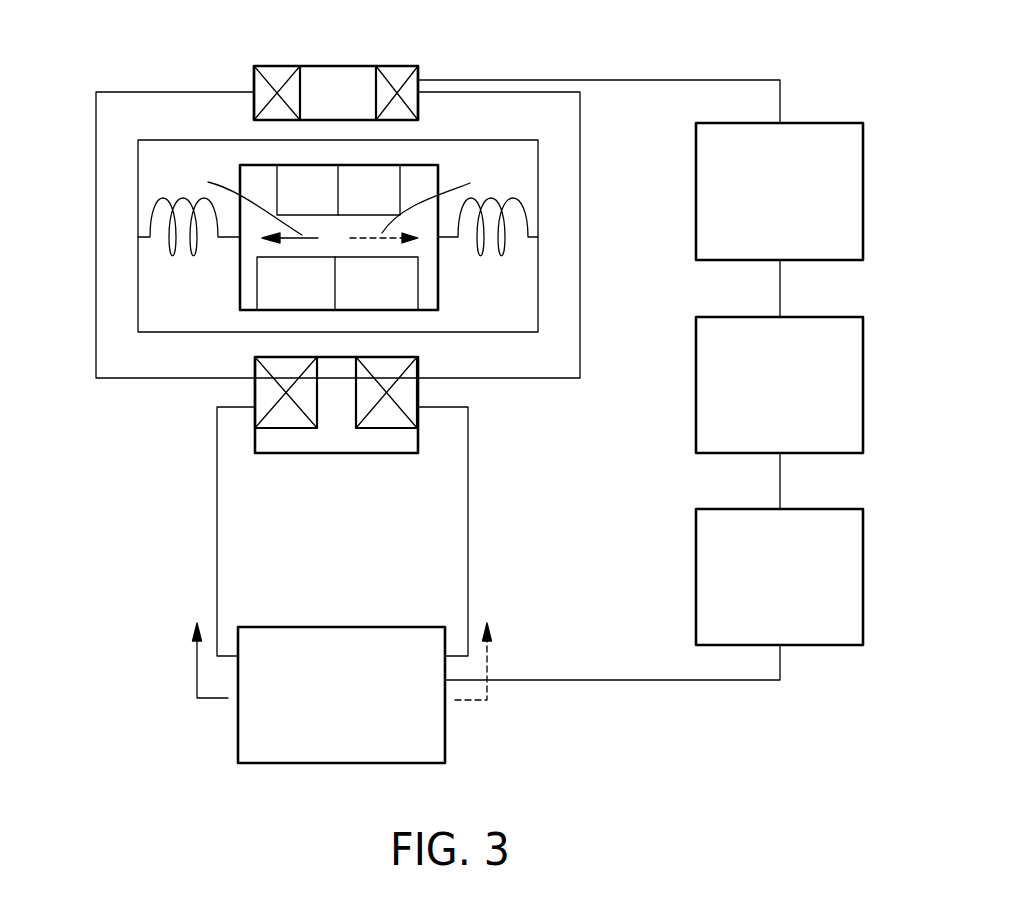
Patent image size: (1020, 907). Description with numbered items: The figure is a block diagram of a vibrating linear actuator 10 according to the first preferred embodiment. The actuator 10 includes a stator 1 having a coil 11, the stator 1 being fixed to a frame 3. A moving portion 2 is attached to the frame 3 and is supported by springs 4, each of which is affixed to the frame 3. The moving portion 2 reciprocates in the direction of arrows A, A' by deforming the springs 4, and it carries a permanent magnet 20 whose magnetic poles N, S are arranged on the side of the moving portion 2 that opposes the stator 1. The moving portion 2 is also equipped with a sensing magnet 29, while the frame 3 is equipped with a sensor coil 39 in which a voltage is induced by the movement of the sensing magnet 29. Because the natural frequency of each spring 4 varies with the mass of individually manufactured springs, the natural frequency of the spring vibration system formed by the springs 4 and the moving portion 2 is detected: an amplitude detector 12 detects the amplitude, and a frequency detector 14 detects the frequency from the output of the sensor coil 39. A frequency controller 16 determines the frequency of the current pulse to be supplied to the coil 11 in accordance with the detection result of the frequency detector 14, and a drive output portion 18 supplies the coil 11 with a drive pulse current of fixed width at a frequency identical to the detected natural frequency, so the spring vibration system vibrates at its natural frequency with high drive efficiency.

The stator 1 is at (337, 413).
The moving portion 2 is at (248, 288).
The frame 3 is at (148, 90).
The spring 4 is at (168, 245).
The vibrating linear actuator 10 is at (77, 315).
The coil 11 is at (280, 420).
The amplitude detector 12 is at (866, 136).
The frequency detector 14 is at (866, 328).
The frequency controller 16 is at (866, 521).
The drive output portion 18 is at (445, 753).
The permanent magnet 20 is at (402, 288).
The sensing magnet 29 is at (383, 172).
The sensor coil 39 is at (393, 78).